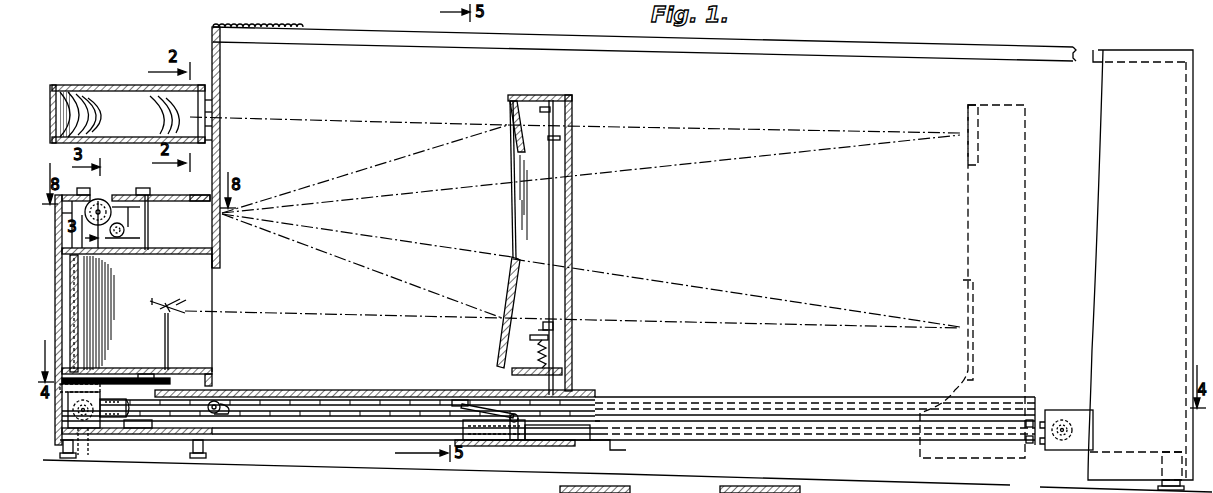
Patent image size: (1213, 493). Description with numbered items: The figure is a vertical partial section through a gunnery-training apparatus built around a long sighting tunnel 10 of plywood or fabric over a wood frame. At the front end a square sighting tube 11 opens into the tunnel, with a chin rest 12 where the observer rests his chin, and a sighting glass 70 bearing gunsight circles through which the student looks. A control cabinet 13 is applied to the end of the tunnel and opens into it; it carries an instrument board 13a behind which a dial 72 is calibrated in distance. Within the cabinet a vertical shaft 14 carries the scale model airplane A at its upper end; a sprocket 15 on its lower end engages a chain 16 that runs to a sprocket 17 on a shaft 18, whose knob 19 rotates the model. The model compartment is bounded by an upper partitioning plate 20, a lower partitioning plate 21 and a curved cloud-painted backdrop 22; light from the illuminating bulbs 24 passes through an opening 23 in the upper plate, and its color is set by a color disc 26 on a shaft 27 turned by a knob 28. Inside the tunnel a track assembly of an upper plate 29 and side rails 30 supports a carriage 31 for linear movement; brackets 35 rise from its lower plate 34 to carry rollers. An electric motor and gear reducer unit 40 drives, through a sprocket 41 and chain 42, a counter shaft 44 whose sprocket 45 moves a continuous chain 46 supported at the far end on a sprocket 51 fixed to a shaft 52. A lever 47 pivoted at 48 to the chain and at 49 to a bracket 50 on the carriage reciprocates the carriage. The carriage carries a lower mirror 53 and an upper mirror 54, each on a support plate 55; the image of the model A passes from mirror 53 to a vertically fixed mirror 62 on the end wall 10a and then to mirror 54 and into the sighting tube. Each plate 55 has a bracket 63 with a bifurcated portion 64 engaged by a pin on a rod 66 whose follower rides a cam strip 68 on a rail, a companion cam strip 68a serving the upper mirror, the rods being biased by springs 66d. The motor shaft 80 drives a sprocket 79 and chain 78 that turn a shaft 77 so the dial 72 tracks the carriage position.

The sighting tunnel 10 is at (782, 62).
The end wall of the sighting tunnel 10a is at (219, 145).
The sighting tube 11 is at (115, 85).
The chin rest 12 is at (52, 118).
The control cabinet 13 is at (56, 308).
The instrument board 13a is at (198, 196).
The vertical shaft 14 is at (169, 326).
The sprocket 15 is at (184, 374).
The chain 16 is at (145, 368).
The sprocket 17 is at (70, 402).
The shaft 18 is at (62, 213).
The knob 19 is at (86, 196).
The upper partitioning plate 20 is at (160, 254).
The lower partitioning plate 21 is at (113, 368).
The backdrop 22 is at (72, 258).
The opening 23 is at (84, 262).
The illuminating bulbs 24 is at (126, 230).
The color disc 26 is at (210, 252).
The shaft 27 is at (150, 200).
The knob 28 is at (143, 190).
The upper plate 29 is at (322, 391).
The side rails 30 is at (722, 411).
The carriage 31 is at (578, 216).
The lower plate 34 is at (608, 451).
The brackets 35 is at (455, 433).
The electric motor and gear reducer unit 40 is at (112, 418).
The sprocket 41 is at (58, 442).
The chain 42 is at (168, 400).
The counter shaft 44 is at (216, 414).
The sprocket 45 is at (236, 413).
The continuous chain 46 is at (275, 420).
The lever 47 is at (490, 406).
The pivot 48 is at (456, 400).
The pivot 49 is at (520, 416).
The bracket 50 is at (532, 422).
The sprocket 51 is at (1042, 440).
The shaft 52 is at (1058, 450).
The lower mirror 53 is at (530, 310).
The upper mirror 54 is at (512, 116).
The support plate 55 is at (520, 110).
The vertically fixed mirror 62 is at (221, 160).
The bracket 63 is at (553, 105).
The bifurcated portion 64 is at (553, 325).
The rod 66 is at (554, 352).
The springs 66d is at (532, 338).
The cam strip 68 is at (737, 430).
The cam strip 68a is at (763, 442).
The sighting glass 70 is at (205, 100).
The dial 72 is at (104, 204).
The shaft 77 is at (95, 205).
The chain 78 is at (102, 326).
The sprocket 79 is at (78, 440).
The shaft 80 is at (84, 428).
The scale model airplane A is at (172, 305).